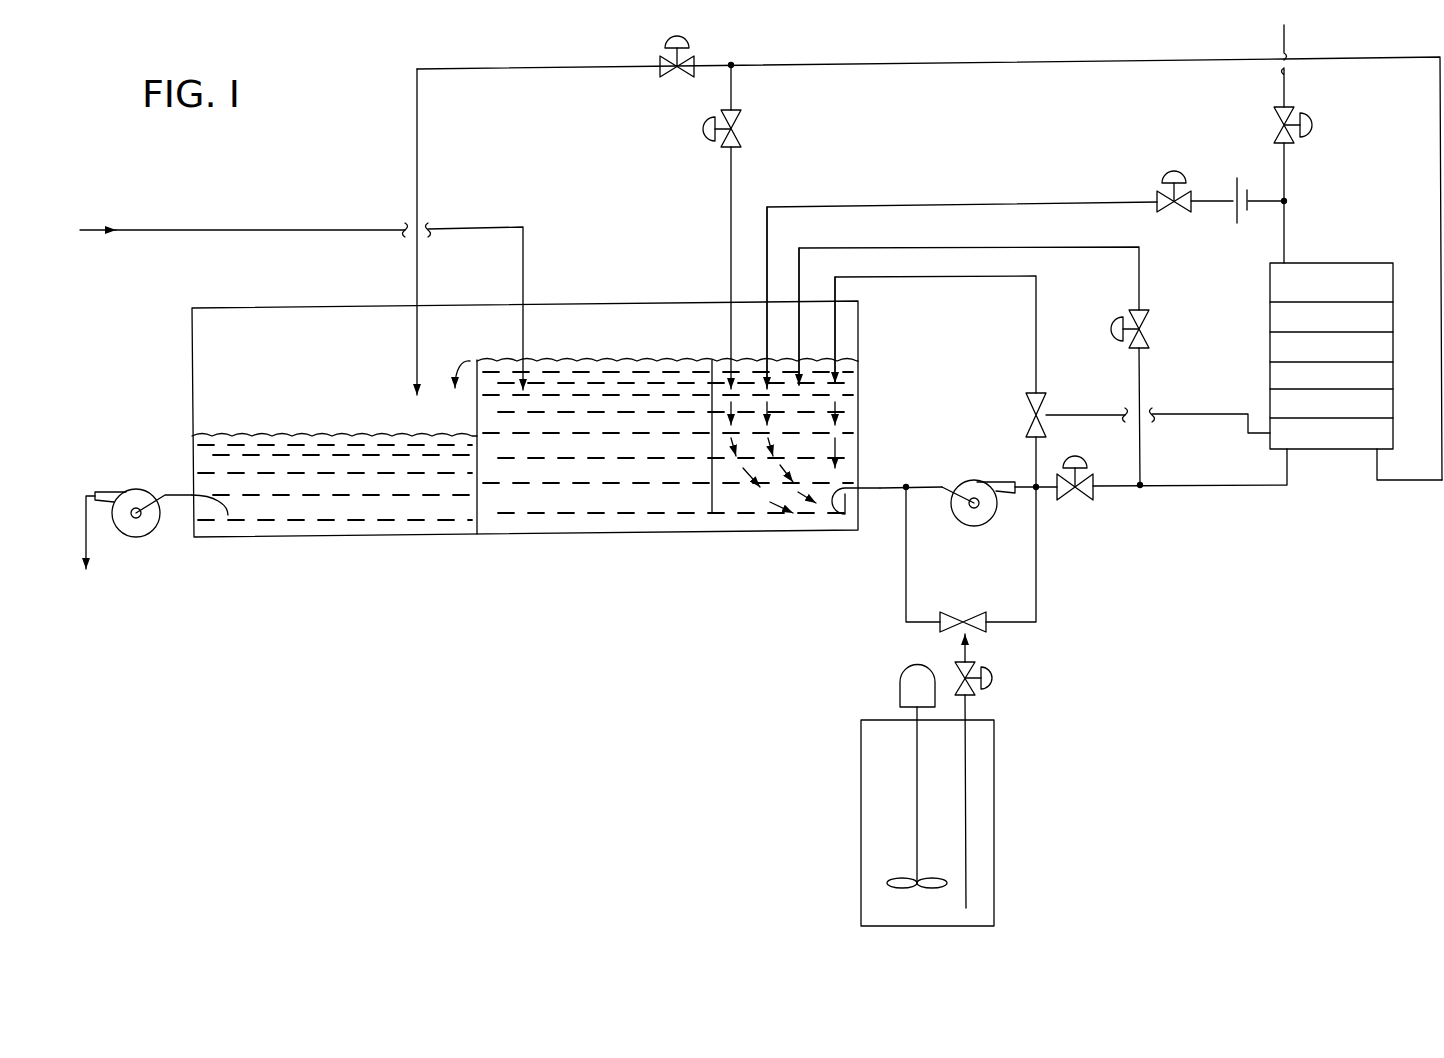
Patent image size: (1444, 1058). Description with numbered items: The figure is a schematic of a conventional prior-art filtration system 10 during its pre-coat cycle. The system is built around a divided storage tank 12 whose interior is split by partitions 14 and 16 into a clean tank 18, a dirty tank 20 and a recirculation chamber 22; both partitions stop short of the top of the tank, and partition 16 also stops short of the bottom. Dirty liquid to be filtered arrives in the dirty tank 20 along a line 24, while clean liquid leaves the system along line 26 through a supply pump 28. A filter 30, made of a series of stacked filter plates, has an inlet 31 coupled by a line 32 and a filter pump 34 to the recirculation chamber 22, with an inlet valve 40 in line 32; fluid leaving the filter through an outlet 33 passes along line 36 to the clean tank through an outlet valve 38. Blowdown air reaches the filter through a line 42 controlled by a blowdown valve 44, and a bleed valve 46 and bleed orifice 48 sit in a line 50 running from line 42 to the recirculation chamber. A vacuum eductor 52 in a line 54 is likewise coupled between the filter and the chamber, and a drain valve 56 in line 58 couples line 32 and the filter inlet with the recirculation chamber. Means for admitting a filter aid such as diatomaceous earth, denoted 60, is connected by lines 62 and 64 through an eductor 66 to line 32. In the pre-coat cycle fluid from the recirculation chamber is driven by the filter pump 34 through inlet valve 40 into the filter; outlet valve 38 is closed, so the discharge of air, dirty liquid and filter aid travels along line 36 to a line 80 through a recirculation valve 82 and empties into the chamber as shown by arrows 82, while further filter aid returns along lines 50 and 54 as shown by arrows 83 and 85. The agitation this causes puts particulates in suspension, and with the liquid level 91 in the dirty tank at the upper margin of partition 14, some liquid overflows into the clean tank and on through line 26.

The filtration system 10 is at (1128, 537).
The divided storage tank 12 is at (531, 540).
The partition 14 is at (475, 503).
The partition 16 is at (708, 497).
The clean tank 18 is at (303, 403).
The dirty tank 20 is at (599, 348).
The recirculation chamber 22 is at (798, 344).
The line 24 is at (553, 252).
The line 26 is at (185, 496).
The supply pump 28 is at (138, 538).
The filter 30 is at (1340, 260).
The inlet 31 is at (1288, 452).
The line 32 is at (876, 486).
The outlet 33 is at (1376, 452).
The filter pump 34 is at (975, 482).
The line 36 is at (418, 185).
The outlet valve 38 is at (668, 74).
The inlet valve 40 is at (1080, 504).
The line 42 is at (1286, 180).
The blowdown valve 44 is at (1273, 125).
The bleed valve 46 is at (1178, 212).
The bleed orifice 48 is at (1233, 206).
The line 50 is at (1022, 205).
The vacuum eductor 52 is at (1027, 408).
The line 54 is at (969, 277).
The drain valve 56 is at (1152, 330).
The line 58 is at (1102, 249).
The means for admitting a filter aid 60 is at (998, 760).
The line 62 is at (906, 585).
The line 64 is at (1037, 553).
The eductor 66 is at (963, 612).
The line 80 is at (735, 163).
The recirculation valve 82 is at (743, 128).
The arrows 83 is at (826, 512).
The arrows 85 is at (836, 410).
The liquid level 91 is at (657, 362).